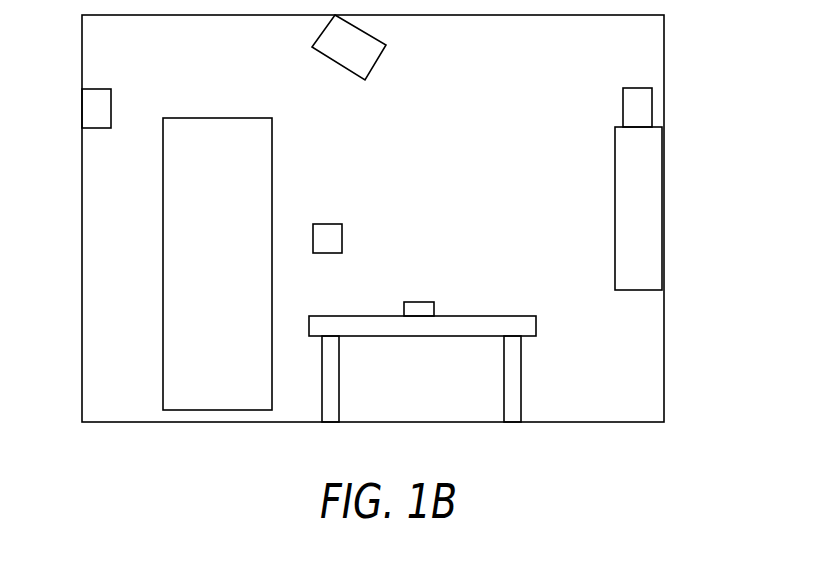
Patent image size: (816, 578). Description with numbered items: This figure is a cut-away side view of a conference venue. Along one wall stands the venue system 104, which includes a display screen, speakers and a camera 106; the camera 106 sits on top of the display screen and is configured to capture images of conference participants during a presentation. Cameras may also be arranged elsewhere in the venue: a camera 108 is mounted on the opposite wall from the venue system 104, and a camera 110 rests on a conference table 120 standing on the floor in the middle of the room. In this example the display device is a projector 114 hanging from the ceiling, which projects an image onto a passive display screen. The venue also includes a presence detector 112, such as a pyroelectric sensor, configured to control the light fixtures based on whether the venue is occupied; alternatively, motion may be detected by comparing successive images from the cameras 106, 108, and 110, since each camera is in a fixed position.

The venue system 104 is at (632, 290).
The camera 106 is at (623, 97).
The camera 108 is at (102, 128).
The camera 110 is at (419, 300).
The presence detector 112 is at (327, 253).
The projector 114 is at (349, 72).
The conference table 120 is at (524, 360).